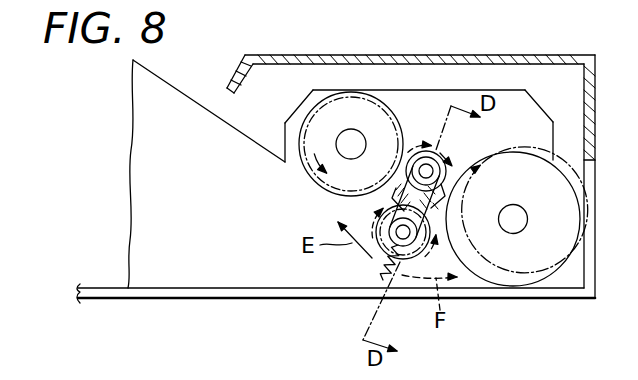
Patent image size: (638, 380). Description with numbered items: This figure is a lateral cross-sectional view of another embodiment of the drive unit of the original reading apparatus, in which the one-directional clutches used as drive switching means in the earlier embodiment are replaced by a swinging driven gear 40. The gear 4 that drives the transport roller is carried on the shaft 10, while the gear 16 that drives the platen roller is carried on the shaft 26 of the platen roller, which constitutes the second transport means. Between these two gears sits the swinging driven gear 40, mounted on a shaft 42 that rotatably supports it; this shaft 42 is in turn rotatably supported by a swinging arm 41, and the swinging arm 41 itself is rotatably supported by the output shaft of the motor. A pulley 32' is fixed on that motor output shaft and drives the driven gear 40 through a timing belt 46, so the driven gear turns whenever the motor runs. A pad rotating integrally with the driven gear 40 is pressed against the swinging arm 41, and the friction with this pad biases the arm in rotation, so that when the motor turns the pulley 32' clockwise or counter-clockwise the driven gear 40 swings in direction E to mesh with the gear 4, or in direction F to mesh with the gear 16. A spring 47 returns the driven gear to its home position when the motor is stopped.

The gear 4 is at (333, 118).
The shaft 10 is at (348, 138).
The gear 16 is at (541, 258).
The shaft 26 is at (513, 228).
The pulley 32' is at (512, 160).
The swinging driven gear 40 is at (392, 256).
The swinging arm 41 is at (452, 215).
The shaft 42 is at (378, 262).
The timing belt 46 is at (388, 197).
The spring 47 is at (383, 281).